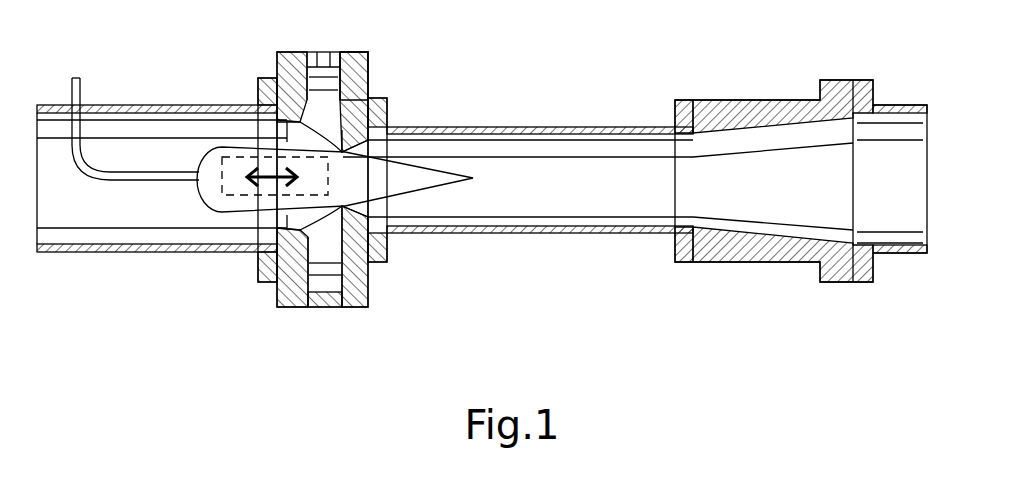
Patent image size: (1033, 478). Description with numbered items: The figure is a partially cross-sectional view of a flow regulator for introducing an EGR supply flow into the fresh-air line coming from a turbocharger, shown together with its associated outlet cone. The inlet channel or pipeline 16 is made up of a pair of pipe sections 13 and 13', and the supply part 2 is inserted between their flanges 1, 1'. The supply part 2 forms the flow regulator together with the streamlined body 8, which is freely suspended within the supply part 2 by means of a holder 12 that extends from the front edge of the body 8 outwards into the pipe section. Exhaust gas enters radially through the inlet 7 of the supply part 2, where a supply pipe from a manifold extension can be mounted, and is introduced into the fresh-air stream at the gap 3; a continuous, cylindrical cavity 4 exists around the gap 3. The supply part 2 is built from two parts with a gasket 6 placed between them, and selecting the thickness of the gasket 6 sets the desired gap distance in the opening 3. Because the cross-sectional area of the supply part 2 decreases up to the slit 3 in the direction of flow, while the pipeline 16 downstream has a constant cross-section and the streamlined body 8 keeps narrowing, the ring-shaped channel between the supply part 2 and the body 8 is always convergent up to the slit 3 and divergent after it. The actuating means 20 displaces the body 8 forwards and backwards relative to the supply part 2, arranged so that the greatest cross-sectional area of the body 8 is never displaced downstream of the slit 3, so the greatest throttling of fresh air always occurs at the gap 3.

The flange 1 is at (245, 158).
The flange 1' is at (401, 159).
The supply part 2 is at (283, 322).
The gap 3 is at (398, 128).
The cylindrical cavity 4 is at (313, 268).
The gasket 6 is at (347, 52).
The inlet 7 is at (315, 52).
The streamlined body 8 is at (402, 185).
The holder 12 is at (92, 183).
The pipe section 13 is at (162, 205).
The pipe section 13' is at (518, 206).
The pipeline 16 is at (490, 118).
The actuating means 20 is at (196, 162).